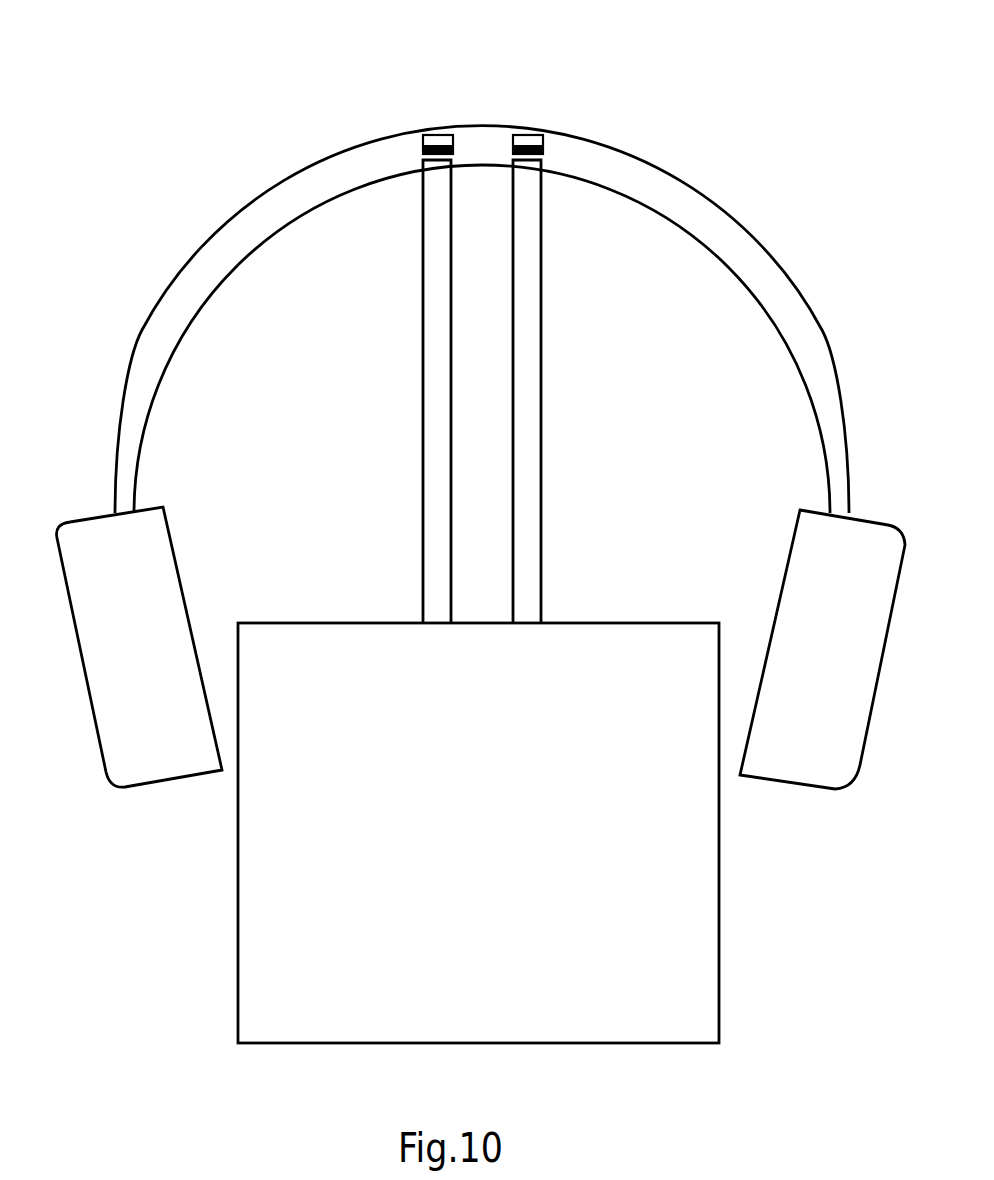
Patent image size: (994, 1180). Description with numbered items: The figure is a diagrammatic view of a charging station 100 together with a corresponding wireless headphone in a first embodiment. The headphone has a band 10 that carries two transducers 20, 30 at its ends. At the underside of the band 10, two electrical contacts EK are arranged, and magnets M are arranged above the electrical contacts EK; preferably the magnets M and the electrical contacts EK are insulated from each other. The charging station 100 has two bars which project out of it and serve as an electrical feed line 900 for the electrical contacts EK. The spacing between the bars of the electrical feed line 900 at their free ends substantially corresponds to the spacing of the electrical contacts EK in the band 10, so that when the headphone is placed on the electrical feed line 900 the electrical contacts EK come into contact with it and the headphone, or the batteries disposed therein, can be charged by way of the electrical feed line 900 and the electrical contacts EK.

The band 10 is at (795, 288).
The transducer 20 is at (88, 547).
The transducer 30 is at (865, 545).
The charging station 100 is at (478, 833).
The electrical feed line 900 is at (437, 460).
The magnets M is at (527, 134).
The electrical contacts EK is at (423, 147).